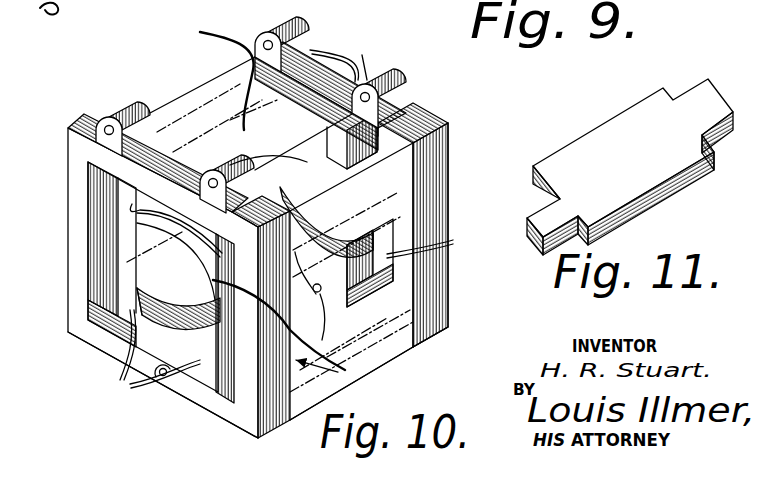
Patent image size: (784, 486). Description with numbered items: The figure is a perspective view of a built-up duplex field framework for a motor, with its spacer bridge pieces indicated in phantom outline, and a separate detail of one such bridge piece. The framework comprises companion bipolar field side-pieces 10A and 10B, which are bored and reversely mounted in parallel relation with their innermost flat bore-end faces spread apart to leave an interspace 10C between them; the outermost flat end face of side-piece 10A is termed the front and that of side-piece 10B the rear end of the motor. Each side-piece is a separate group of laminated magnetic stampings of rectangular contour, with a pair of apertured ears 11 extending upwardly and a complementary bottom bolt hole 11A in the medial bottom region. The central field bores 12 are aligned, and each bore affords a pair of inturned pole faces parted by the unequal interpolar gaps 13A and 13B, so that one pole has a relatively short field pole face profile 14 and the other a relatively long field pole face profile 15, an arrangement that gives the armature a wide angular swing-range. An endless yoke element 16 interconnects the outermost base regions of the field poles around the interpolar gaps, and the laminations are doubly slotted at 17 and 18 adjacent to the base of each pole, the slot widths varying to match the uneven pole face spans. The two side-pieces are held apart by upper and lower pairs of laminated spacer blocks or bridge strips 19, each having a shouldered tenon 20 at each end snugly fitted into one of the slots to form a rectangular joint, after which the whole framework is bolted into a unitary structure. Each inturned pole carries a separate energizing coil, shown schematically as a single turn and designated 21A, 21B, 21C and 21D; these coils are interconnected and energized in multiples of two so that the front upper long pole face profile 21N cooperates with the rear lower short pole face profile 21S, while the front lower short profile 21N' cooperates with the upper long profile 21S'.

In FIG. 10, the bipolar field side-piece 10A is at (287, 397).
In FIG. 10, the bipolar field side-piece 10B is at (395, 305).
In FIG. 10, the interspace 10C is at (368, 310).
In FIG. 10, the apertured ear 11 is at (118, 113).
In FIG. 10, the bottom bolt hole 11A is at (160, 380).
In FIG. 10, the central field bore 12 is at (158, 294).
In FIG. 10, the interpolar gap 13A is at (130, 268).
In FIG. 10, the interpolar gap 13B is at (247, 290).
In FIG. 10, the short field pole face profile 14 is at (128, 362).
In FIG. 10, the long field pole face profile 15 is at (133, 240).
In FIG. 10, the endless yoke element 16 is at (390, 128).
In FIG. 10, the slot 17 is at (378, 163).
In FIG. 10, the slot 18 is at (275, 202).
In FIG. 10, the spacer bridge strip 19 is at (185, 100).
In FIG. 11, the spacer bridge strip 19 is at (630, 112).
In FIG. 11, the shouldered tenon 20 is at (690, 92).
In FIG. 10, the energizing coil 21A is at (173, 218).
In FIG. 10, the energizing coil 21B is at (453, 240).
In FIG. 10, the energizing coil 21C is at (333, 68).
In FIG. 10, the energizing coil 21D is at (187, 365).
In FIG. 10, the front upper long pole face profile 21N is at (174, 261).
In FIG. 10, the front lower short pole face profile 21N' is at (169, 295).
In FIG. 10, the rear lower short pole face profile 21S is at (369, 228).
In FIG. 10, the upper long pole face profile 21S' is at (281, 173).